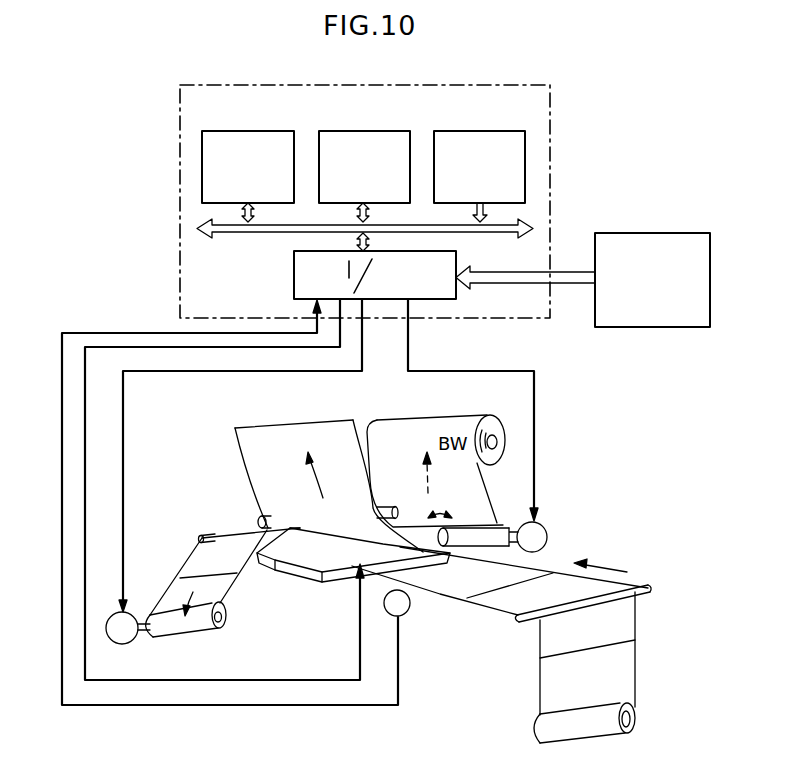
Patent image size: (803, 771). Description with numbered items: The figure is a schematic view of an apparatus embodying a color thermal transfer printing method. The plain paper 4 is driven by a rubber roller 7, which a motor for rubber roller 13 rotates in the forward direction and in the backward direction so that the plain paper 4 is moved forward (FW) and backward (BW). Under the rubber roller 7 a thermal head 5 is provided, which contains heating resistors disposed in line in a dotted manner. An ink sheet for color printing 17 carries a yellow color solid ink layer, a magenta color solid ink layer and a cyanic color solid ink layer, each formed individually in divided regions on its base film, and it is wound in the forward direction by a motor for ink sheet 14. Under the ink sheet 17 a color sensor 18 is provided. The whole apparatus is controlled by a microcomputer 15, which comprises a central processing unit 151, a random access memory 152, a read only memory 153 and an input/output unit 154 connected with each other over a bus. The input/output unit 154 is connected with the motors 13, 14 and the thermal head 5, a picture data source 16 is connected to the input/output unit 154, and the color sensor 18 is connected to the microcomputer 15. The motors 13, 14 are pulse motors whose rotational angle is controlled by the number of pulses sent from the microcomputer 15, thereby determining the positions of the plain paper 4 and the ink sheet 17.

The microcomputer 15 is at (550, 133).
The central processing unit 151 is at (250, 131).
The random access memory 152 is at (372, 131).
The read only memory 153 is at (485, 131).
The input/output unit 154 is at (294, 278).
The picture data source 16 is at (650, 233).
The plain paper 4 is at (258, 458).
The thermal head 5 is at (320, 574).
The rubber roller 7 is at (430, 544).
The motor for rubber roller 13 is at (547, 533).
The motor for ink sheet 14 is at (132, 641).
The ink sheet for color printing 17 is at (637, 622).
The color sensor 18 is at (407, 611).